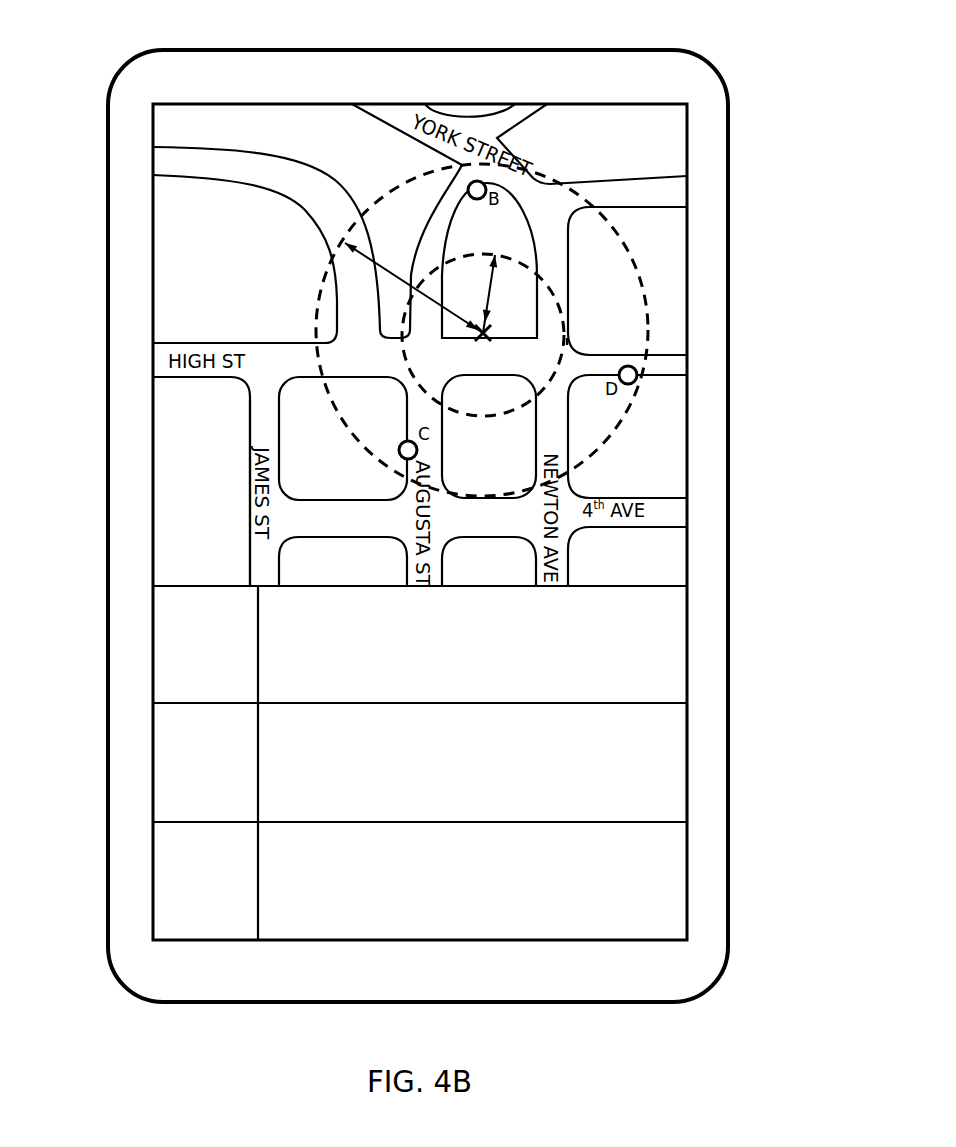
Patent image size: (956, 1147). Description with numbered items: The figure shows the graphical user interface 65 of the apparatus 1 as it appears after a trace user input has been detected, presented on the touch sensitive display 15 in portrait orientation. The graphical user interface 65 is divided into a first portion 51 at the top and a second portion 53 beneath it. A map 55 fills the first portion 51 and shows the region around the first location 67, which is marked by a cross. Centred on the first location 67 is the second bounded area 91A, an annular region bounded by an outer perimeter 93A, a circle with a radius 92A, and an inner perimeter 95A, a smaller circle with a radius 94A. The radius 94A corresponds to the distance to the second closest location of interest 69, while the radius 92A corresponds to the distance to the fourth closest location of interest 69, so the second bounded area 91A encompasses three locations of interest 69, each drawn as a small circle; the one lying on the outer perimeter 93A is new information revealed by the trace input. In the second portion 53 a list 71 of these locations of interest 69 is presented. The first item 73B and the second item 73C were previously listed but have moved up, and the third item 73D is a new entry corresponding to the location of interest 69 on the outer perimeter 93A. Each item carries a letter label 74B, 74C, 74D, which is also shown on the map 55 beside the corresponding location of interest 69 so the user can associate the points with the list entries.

The apparatus 1 is at (660, 1022).
The display 15 is at (730, 385).
The first portion 51 is at (190, 290).
The second portion 53 is at (182, 732).
The map 55 is at (180, 490).
The graphical user interface 65 is at (205, 528).
The first location 67 is at (480, 334).
The locations of interest 69 is at (490, 188).
The list 71 is at (670, 722).
The first item 73B is at (670, 632).
The second item 73C is at (670, 782).
The third item 73D is at (670, 892).
The label 74B is at (180, 617).
The label 74C is at (182, 780).
The label 74D is at (182, 873).
The second bounded area 91A is at (605, 294).
The radius 92A is at (372, 257).
The outer perimeter 93A is at (640, 354).
The radius 94A is at (445, 305).
The inner perimeter 95A is at (548, 280).